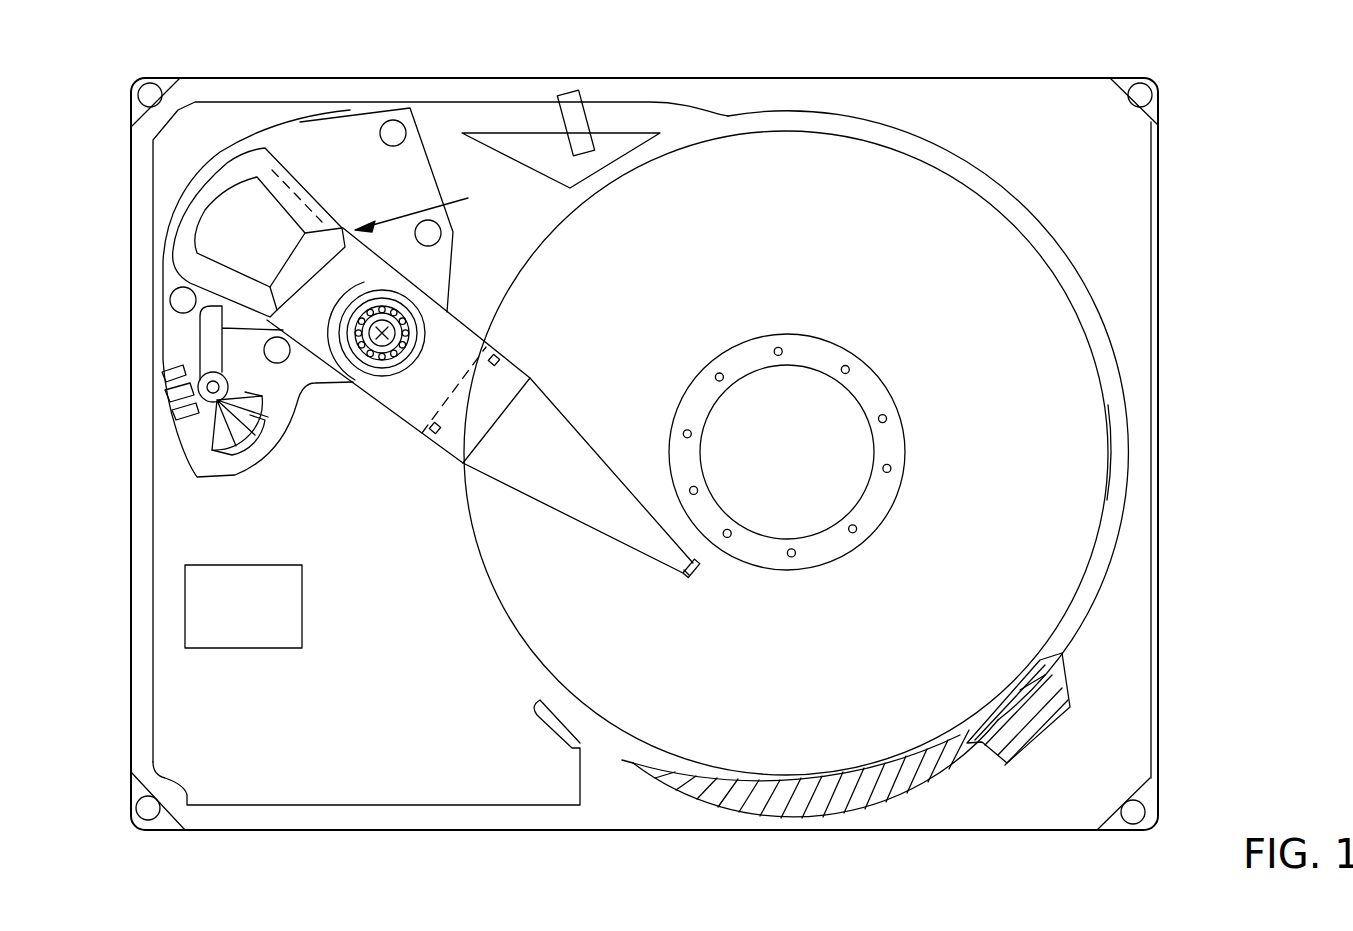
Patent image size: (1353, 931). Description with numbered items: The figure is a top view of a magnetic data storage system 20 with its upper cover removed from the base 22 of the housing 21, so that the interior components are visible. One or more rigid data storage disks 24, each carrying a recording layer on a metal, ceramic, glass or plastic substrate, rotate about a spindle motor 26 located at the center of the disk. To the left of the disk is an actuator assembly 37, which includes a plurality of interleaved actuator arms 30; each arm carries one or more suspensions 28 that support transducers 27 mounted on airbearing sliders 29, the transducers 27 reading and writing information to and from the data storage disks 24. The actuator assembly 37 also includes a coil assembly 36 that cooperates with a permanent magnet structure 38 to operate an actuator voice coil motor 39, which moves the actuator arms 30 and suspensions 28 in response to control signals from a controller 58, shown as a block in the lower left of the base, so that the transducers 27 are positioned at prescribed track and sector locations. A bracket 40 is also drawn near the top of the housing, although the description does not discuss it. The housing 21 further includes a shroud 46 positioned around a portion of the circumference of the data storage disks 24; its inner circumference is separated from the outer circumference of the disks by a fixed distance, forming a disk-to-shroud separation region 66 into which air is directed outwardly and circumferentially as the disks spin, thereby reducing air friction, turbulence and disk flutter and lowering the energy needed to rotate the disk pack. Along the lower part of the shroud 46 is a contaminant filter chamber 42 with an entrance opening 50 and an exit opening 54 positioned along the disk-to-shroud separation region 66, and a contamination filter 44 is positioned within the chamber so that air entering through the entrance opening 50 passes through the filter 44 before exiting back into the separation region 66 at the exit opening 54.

The magnetic data storage system 20 is at (590, 41).
The housing 21 is at (455, 826).
The base 22 is at (298, 826).
The rigid data storage disk 24 is at (836, 207).
The spindle motor 26 is at (818, 485).
The transducer 27 is at (700, 574).
The suspension 28 is at (530, 472).
The airbearing slider 29 is at (684, 577).
The actuator arm 30 is at (400, 415).
The coil assembly 36 is at (243, 170).
The actuator assembly 37 is at (342, 400).
The permanent magnet structure 38 is at (408, 162).
The actuator voice coil motor 39 is at (484, 198).
The bracket 40 is at (590, 92).
The contaminant filter chamber 42 is at (778, 817).
The contamination filter 44 is at (1062, 660).
The shroud 46 is at (1113, 343).
The entrance opening 50 is at (678, 778).
The exit opening 54 is at (1020, 690).
The controller 58 is at (230, 602).
The disk-to-shroud separation region 66 is at (1115, 422).